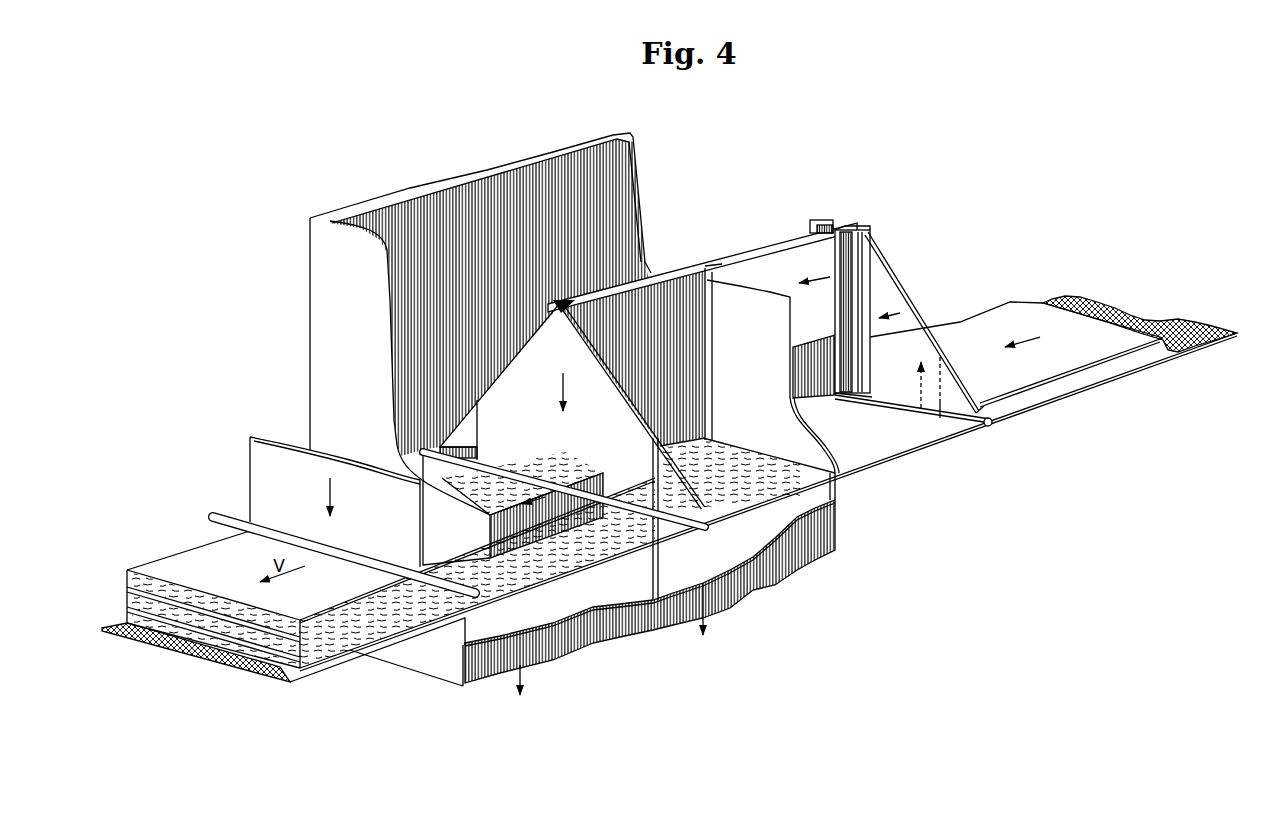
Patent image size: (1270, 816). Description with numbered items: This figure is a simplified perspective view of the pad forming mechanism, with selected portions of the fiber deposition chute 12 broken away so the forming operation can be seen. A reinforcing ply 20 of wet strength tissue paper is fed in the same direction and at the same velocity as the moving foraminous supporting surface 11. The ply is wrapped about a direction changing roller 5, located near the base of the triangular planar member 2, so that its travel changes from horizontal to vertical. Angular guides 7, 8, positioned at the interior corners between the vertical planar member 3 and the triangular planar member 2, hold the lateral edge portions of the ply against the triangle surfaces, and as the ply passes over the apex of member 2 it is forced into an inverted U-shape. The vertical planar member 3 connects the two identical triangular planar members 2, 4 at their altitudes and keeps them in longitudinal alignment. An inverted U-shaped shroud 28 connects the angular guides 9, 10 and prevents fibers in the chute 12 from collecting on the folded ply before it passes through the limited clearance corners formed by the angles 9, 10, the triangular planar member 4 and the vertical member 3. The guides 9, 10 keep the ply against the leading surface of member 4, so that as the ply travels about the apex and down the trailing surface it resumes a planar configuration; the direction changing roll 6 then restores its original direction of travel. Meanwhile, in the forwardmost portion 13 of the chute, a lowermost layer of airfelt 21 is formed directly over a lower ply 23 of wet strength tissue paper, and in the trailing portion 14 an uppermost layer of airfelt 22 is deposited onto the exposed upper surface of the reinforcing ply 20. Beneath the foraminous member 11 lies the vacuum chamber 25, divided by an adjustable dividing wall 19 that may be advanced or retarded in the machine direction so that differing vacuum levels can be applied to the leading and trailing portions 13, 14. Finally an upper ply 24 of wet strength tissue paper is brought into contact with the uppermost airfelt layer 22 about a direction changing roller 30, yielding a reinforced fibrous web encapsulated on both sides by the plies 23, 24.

The triangular planar member 2 is at (898, 380).
The vertical planar member 3 is at (810, 380).
The triangular planar member 4 is at (667, 480).
The direction changing roller 5 is at (993, 425).
The direction changing roll 6 is at (710, 530).
The angular guide 7 is at (824, 220).
The angular guide 8 is at (862, 230).
The angular guide 9 is at (553, 318).
The angular guide 10 is at (578, 318).
The foraminous supporting surface 11 is at (1150, 323).
The fiber deposition chute 12 is at (338, 203).
The forwardmost portion of the fiber deposition chute 13 is at (600, 187).
The trailing portion of the fiber deposition chute 14 is at (441, 243).
The adjustable dividing wall 19 is at (625, 590).
The reinforcing ply 20 is at (977, 317).
The lowermost layer of airfelt 21 is at (127, 607).
The uppermost layer of airfelt 22 is at (127, 577).
The ply of wet strength tissue paper 23 is at (317, 663).
The ply of wet strength tissue paper 24 is at (250, 477).
The vacuum chamber 25 is at (430, 681).
The inverted U-shaped shroud 28 is at (683, 267).
The direction changing roller 30 is at (220, 514).